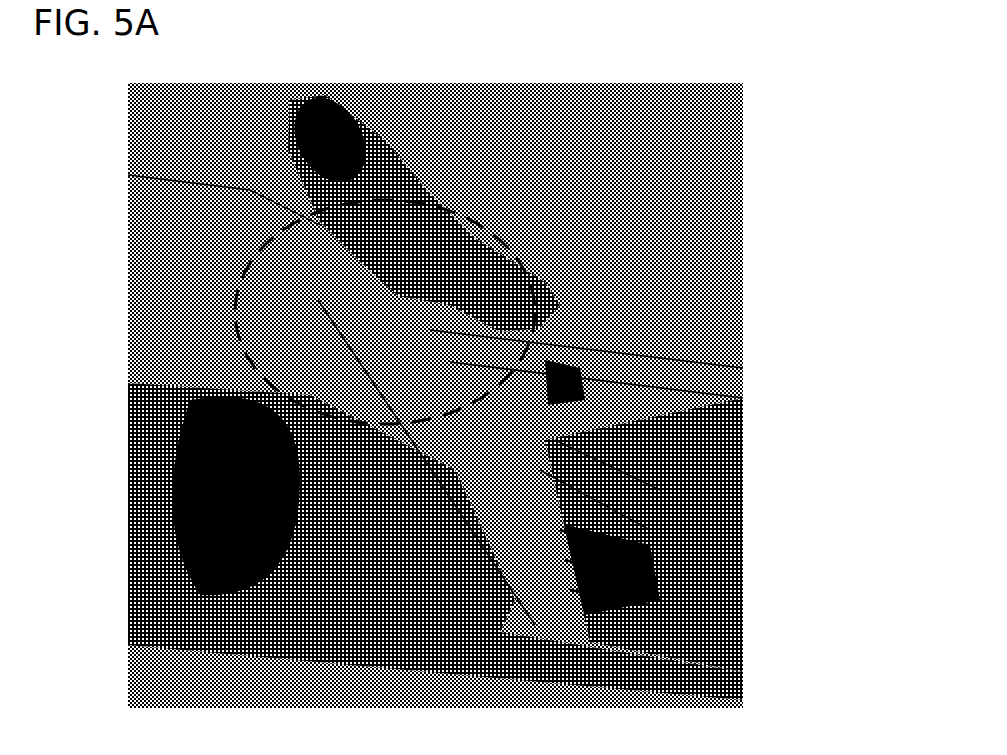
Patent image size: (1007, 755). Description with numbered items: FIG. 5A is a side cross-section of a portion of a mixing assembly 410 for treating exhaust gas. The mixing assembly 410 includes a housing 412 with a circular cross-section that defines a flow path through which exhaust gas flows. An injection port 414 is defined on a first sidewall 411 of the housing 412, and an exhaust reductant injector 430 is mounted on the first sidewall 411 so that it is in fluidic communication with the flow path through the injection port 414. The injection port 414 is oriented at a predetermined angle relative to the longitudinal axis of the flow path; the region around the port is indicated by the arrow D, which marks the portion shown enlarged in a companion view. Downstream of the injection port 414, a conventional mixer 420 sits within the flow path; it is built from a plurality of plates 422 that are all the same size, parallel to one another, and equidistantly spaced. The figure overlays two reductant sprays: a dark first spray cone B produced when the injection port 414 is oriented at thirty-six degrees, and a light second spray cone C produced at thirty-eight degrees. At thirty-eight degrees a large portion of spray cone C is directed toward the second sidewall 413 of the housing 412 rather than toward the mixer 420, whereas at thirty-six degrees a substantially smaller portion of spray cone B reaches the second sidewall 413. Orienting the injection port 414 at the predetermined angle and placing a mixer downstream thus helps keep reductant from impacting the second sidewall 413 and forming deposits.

The mixing assembly 410 is at (672, 372).
The first sidewall 411 is at (560, 365).
The housing 412 is at (338, 645).
The second sidewall 413 is at (493, 627).
The injection port 414 is at (312, 300).
The conventional mixer 420 is at (592, 430).
The plates 422 is at (585, 580).
The exhaust reductant injector 430 is at (197, 252).
The first spray cone B is at (666, 487).
The second spray cone C is at (520, 611).
The arrow D is at (530, 260).